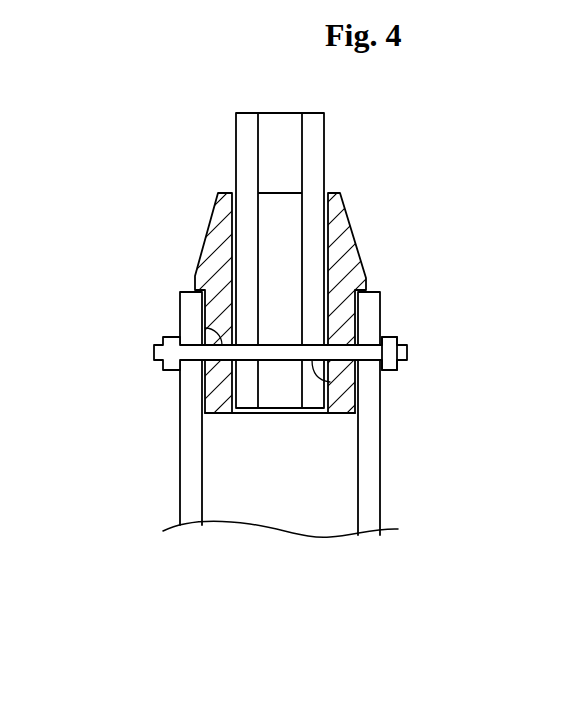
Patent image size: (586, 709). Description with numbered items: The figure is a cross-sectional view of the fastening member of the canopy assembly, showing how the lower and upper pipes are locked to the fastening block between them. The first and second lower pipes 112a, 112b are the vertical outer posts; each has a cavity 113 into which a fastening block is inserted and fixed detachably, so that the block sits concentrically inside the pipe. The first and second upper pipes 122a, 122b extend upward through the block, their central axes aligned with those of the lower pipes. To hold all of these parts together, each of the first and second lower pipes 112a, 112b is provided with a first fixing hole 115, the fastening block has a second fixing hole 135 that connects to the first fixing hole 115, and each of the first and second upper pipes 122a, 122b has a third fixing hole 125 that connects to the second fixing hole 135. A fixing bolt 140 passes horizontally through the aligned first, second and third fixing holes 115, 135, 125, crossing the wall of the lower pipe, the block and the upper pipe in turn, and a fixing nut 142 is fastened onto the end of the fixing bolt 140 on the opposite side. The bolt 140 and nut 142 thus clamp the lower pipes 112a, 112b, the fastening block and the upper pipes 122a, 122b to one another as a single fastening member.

The first lower pipe 112a is at (349, 413).
The second lower pipe 112b is at (380, 442).
The cavity 113 is at (361, 484).
The first fixing hole 115 is at (168, 373).
The first upper pipe 122a is at (184, 260).
The second upper pipe 122b is at (243, 160).
The third fixing hole 125 is at (330, 382).
The second fixing hole 135 is at (205, 326).
The fixing bolt 140 is at (155, 340).
The fixing nut 142 is at (397, 339).